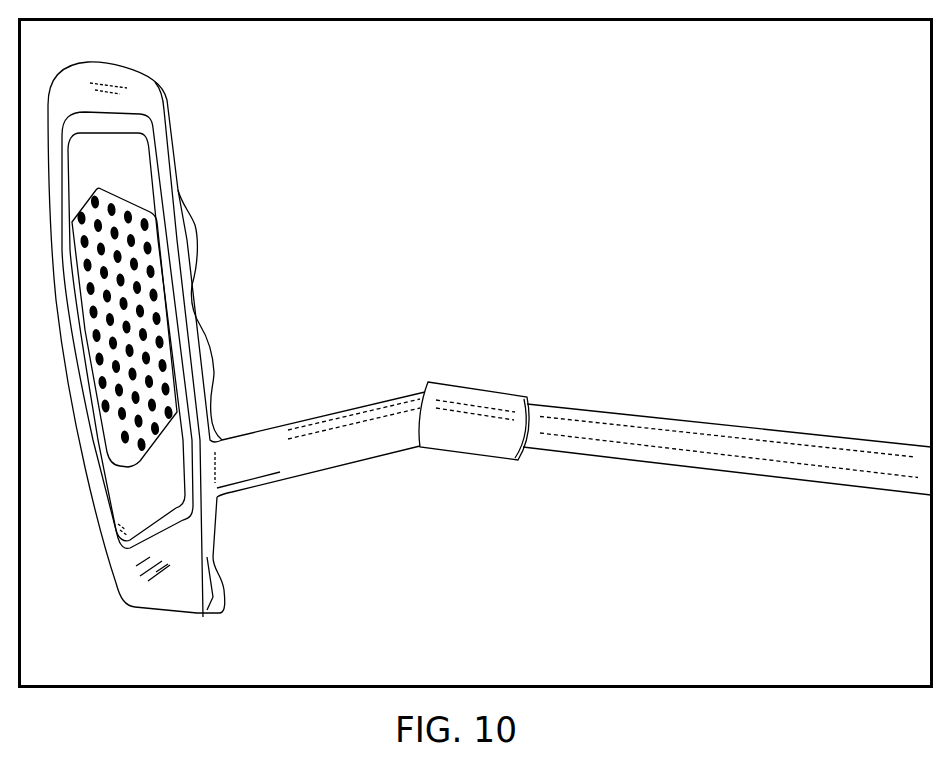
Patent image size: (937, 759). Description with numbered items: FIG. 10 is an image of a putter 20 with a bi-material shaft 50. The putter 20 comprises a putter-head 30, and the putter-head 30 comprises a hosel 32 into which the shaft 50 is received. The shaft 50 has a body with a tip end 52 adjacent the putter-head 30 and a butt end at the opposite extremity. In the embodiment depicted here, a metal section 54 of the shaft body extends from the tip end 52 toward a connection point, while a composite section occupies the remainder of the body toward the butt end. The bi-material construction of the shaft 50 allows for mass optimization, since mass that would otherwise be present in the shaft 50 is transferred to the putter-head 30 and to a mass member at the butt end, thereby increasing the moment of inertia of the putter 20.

The putter 20 is at (480, 213).
The putter-head 30 is at (240, 275).
The hosel 32 is at (455, 382).
The shaft 50 is at (743, 369).
The tip end 52 is at (558, 383).
The metal section 54 is at (667, 415).